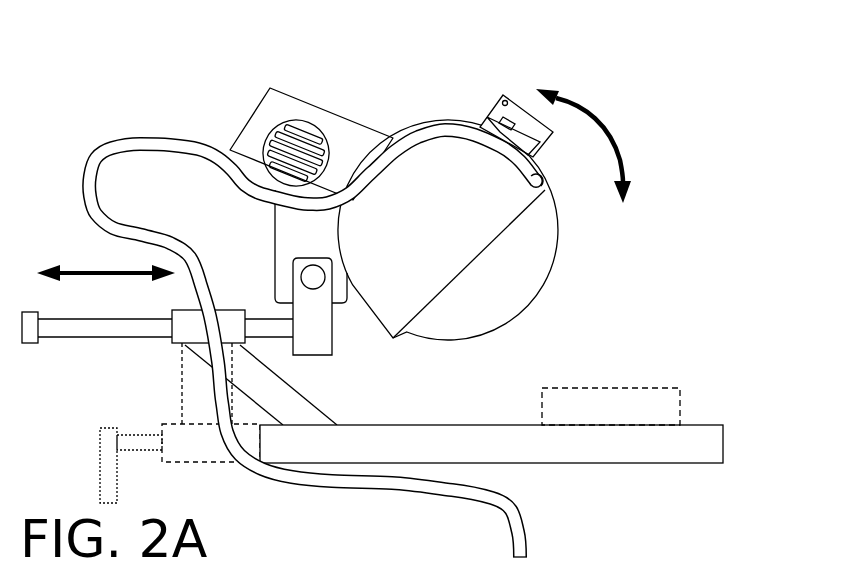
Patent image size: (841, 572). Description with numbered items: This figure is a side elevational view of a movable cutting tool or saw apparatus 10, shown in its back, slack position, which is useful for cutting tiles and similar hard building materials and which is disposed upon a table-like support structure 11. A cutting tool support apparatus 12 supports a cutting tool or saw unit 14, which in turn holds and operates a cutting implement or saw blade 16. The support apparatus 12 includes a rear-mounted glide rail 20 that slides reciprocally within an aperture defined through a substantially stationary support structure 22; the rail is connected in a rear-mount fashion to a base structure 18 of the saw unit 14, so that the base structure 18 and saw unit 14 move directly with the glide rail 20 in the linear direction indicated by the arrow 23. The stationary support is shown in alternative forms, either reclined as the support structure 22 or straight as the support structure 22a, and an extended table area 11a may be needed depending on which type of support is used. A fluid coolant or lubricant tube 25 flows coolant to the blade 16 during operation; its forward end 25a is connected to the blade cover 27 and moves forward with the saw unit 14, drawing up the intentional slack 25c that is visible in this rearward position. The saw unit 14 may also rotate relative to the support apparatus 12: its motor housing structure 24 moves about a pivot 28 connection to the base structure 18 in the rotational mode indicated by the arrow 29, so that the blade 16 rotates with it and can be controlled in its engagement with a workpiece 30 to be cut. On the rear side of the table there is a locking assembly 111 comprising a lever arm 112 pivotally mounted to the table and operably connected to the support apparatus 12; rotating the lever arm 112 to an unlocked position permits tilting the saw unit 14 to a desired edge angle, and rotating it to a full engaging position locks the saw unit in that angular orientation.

The saw apparatus 10 is at (120, 42).
The table-like support structure 11 is at (557, 452).
The extended table area 11a is at (183, 455).
The cutting tool support apparatus 12 is at (260, 292).
The saw unit 14 is at (412, 93).
The saw blade 16 is at (541, 266).
The base structure 18 is at (323, 340).
The glide rail 20 is at (72, 328).
The support structure 22 is at (273, 389).
The straight support structure 22a is at (194, 378).
The arrow 23 is at (101, 268).
The motor housing structure 24 is at (282, 108).
The coolant tube 25 is at (118, 150).
The forward end of tube 25a is at (549, 174).
The slack 25c is at (130, 208).
The blade cover 27 is at (447, 130).
The pivot 28 is at (306, 266).
The arrow 29 is at (607, 117).
The workpiece 30 is at (660, 390).
The locking assembly 111 is at (75, 430).
The lever arm 112 is at (107, 478).